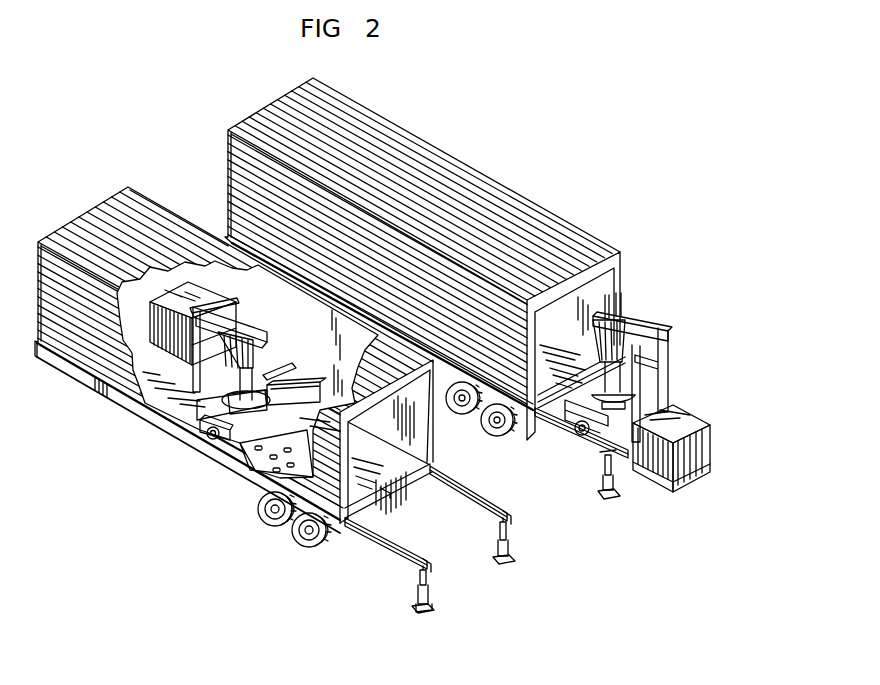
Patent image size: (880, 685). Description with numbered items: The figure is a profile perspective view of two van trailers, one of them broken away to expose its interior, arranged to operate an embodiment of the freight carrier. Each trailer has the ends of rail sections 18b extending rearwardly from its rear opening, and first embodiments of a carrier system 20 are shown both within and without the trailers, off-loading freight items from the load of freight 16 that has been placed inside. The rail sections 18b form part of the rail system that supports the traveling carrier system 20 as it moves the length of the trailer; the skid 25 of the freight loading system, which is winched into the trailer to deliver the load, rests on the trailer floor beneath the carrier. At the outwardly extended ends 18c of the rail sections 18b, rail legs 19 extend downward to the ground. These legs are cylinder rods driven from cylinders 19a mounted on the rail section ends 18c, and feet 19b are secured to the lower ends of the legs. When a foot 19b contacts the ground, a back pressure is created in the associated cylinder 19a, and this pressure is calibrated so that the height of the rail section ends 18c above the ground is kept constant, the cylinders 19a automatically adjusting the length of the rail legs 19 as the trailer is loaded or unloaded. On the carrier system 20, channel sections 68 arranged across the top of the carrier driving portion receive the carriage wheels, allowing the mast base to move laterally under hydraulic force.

The load of freight 16 is at (222, 279).
The carrier system 20 is at (282, 330).
The skid 25 is at (287, 440).
The channel sections 68 is at (207, 436).
The rail sections 18b is at (367, 537).
The rail section ends 18c is at (413, 570).
The rail legs 19 is at (471, 561).
The cylinders 19a is at (502, 533).
The feet 19b is at (505, 567).